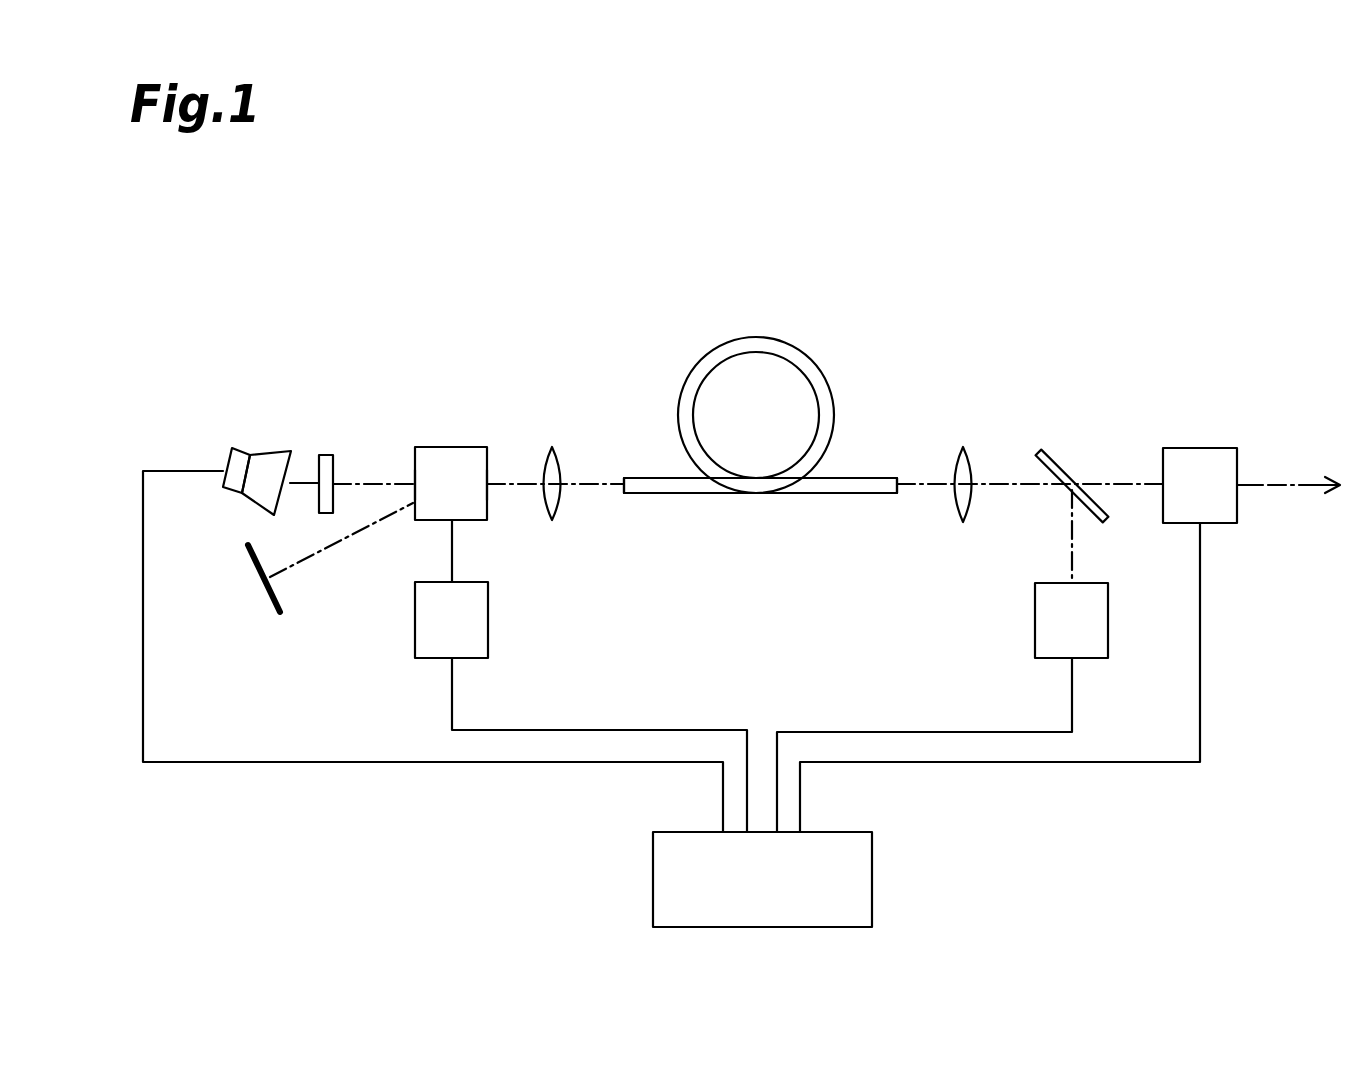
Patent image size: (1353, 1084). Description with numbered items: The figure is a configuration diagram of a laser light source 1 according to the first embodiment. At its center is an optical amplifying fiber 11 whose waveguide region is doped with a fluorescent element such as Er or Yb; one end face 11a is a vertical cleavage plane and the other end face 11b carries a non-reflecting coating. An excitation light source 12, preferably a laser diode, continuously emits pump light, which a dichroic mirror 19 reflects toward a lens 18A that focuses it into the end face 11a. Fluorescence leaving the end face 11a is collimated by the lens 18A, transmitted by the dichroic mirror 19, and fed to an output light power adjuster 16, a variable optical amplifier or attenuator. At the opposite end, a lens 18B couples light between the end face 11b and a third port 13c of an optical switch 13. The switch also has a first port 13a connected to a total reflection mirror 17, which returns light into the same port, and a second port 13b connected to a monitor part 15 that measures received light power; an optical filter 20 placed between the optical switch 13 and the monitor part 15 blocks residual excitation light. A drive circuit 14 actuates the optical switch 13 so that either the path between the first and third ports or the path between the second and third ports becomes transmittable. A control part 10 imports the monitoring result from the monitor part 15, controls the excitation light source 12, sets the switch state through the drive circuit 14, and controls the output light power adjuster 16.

The laser light source 1 is at (1110, 225).
The control part 10 is at (872, 875).
The optical amplifying fiber 11 is at (790, 338).
The end face 11a is at (897, 493).
The end face 11b is at (624, 493).
The excitation light source 12 is at (1035, 630).
The optical switch 13 is at (458, 447).
The first port 13a is at (413, 505).
The second port 13b is at (413, 482).
The third port 13c is at (488, 492).
The drive circuit 14 is at (488, 615).
The monitor part 15 is at (280, 450).
The output light power adjuster 16 is at (1202, 448).
The total reflection mirror 17 is at (277, 593).
The lens 18A is at (970, 462).
The lens 18B is at (558, 462).
The dichroic mirror 19 is at (1060, 462).
The optical filter 20 is at (326, 455).